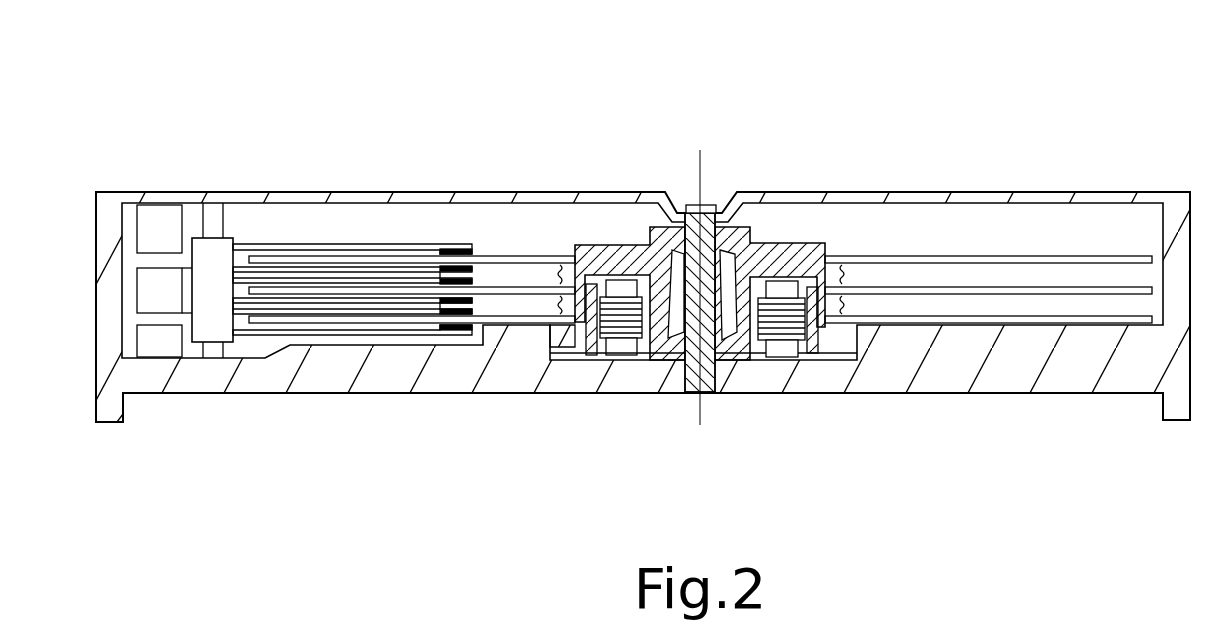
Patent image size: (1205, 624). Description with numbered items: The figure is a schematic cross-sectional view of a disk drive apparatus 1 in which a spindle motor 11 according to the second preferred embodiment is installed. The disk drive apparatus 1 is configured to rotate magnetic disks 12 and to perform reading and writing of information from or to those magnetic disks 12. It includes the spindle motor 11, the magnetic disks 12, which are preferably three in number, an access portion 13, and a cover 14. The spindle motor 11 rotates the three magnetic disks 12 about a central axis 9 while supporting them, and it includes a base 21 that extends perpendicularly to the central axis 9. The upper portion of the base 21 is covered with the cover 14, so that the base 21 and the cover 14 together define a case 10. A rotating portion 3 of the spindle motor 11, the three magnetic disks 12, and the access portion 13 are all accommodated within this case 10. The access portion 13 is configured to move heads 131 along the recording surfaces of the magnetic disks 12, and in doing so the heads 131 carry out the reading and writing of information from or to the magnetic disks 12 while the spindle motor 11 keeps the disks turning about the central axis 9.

The disk drive apparatus 1 is at (262, 116).
The rotating portion 3 is at (603, 244).
The central axis 9 is at (694, 168).
The case 10 is at (165, 174).
The spindle motor 11 is at (791, 238).
The magnetic disks 12 is at (1003, 316).
The access portion 13 is at (385, 238).
The heads 131 is at (461, 268).
The cover 14 is at (1088, 191).
The base 21 is at (912, 378).